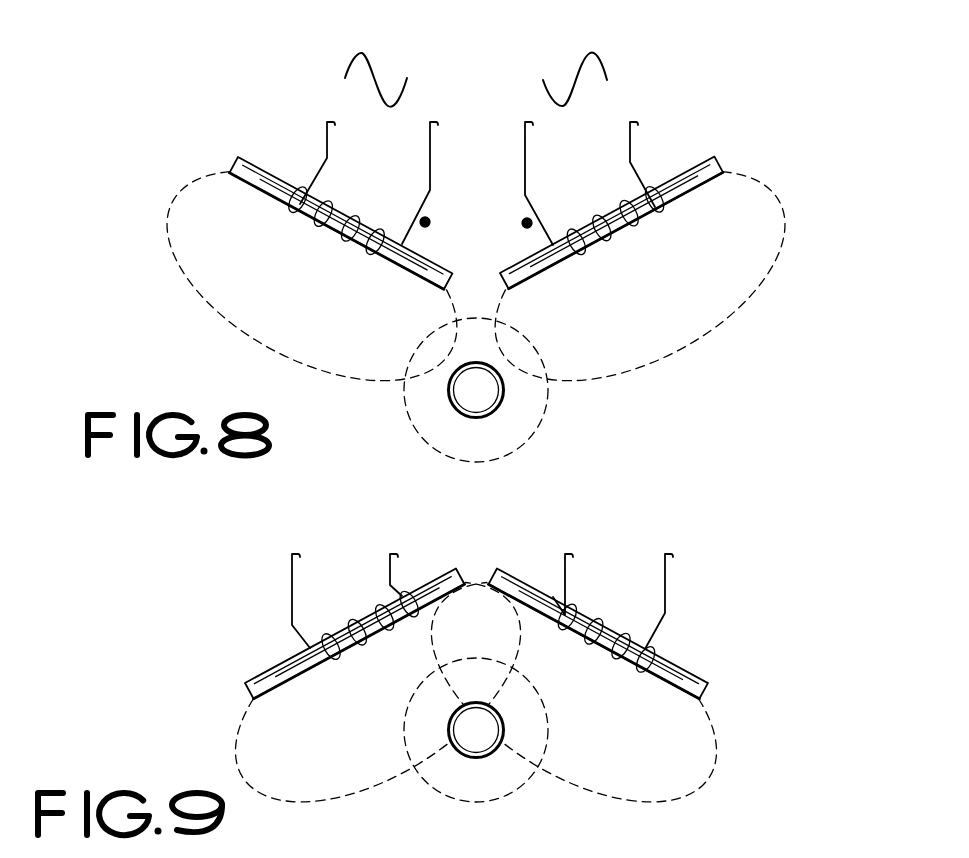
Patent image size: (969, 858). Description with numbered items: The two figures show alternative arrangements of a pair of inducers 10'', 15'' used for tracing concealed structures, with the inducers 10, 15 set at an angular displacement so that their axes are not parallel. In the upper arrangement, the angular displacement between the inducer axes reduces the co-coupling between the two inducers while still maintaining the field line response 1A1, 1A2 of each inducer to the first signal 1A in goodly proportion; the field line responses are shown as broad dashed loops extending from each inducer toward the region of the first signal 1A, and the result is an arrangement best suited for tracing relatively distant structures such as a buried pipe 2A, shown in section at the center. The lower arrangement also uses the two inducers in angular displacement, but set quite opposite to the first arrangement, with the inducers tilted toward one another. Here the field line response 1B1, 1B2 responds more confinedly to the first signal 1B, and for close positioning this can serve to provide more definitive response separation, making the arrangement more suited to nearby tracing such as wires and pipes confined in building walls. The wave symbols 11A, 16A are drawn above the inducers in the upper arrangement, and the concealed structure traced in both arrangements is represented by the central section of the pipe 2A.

In FIG. 8, the first signal 1A is at (404, 416).
In FIG. 9, the first signal 1B is at (442, 794).
In FIG. 8, the buried pipe 2A is at (487, 386).
In FIG. 9, the buried pipe 2A is at (487, 727).
In FIG. 8, the field line response 1A1 is at (225, 318).
In FIG. 8, the field line response 1A2 is at (762, 287).
In FIG. 9, the field line response 1B1 is at (236, 757).
In FIG. 9, the field line response 1B2 is at (707, 777).
In FIG. 8, the inducer 10'' is at (330, 191).
In FIG. 9, the inducer 10'' is at (341, 633).
In FIG. 8, the inducer 15'' is at (643, 195).
In FIG. 9, the inducer 15'' is at (615, 633).
In FIG. 8, the first holder bar 10 is at (330, 191).
In FIG. 9, the first holder bar 10 is at (341, 633).
In FIG. 8, the second holder bar 15 is at (643, 195).
In FIG. 9, the second holder bar 15 is at (615, 633).
In FIG. 8, the first spring wire 11A is at (388, 75).
In FIG. 8, the second spring wire 16A is at (603, 57).